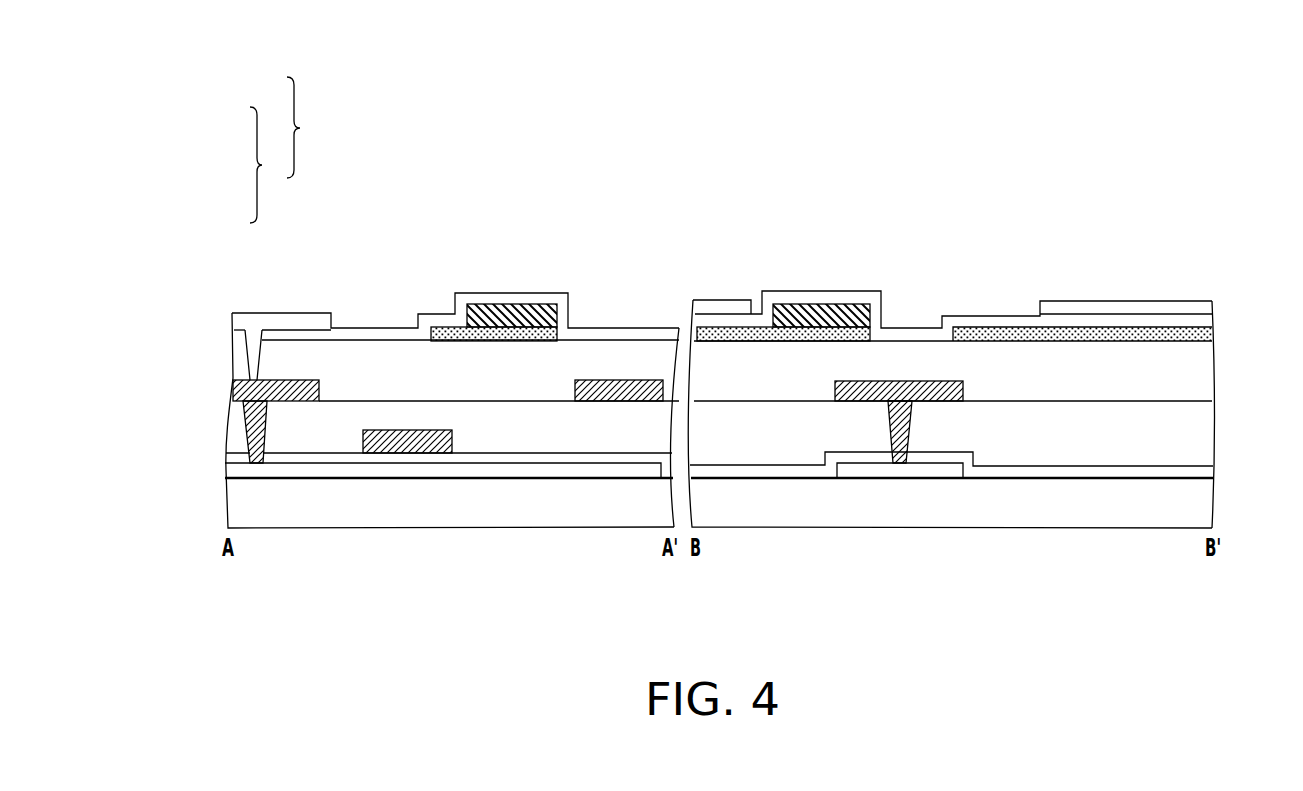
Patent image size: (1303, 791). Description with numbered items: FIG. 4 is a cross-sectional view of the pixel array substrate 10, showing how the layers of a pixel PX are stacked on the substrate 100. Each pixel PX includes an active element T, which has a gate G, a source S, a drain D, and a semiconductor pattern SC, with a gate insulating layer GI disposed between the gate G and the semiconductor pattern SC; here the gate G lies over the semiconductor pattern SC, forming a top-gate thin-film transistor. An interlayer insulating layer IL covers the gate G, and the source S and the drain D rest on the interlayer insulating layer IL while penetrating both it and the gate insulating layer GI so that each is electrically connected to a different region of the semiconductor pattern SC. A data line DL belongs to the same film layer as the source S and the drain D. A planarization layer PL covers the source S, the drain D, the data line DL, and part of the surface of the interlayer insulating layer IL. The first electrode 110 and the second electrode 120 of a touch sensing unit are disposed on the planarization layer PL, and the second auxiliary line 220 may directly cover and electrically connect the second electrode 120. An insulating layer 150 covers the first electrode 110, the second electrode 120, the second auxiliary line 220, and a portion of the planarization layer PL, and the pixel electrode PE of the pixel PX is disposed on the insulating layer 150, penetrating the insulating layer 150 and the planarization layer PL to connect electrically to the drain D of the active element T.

The pixel array substrate 10 is at (1230, 625).
The substrate 100 is at (1200, 503).
The first electrode 110 is at (1208, 335).
The second electrode 120 is at (450, 330).
The insulating layer 150 is at (245, 335).
The second auxiliary line 220 is at (507, 316).
The pixel electrode PE is at (252, 320).
The pixel PX is at (307, 127).
The active element T is at (263, 165).
The source S is at (919, 385).
The semiconductor pattern SC is at (505, 470).
The gate G is at (402, 455).
The drain D is at (240, 389).
The data line DL is at (622, 388).
The gate insulating layer GI is at (240, 459).
The interlayer insulating layer IL is at (1200, 436).
The planarization layer PL is at (1203, 375).